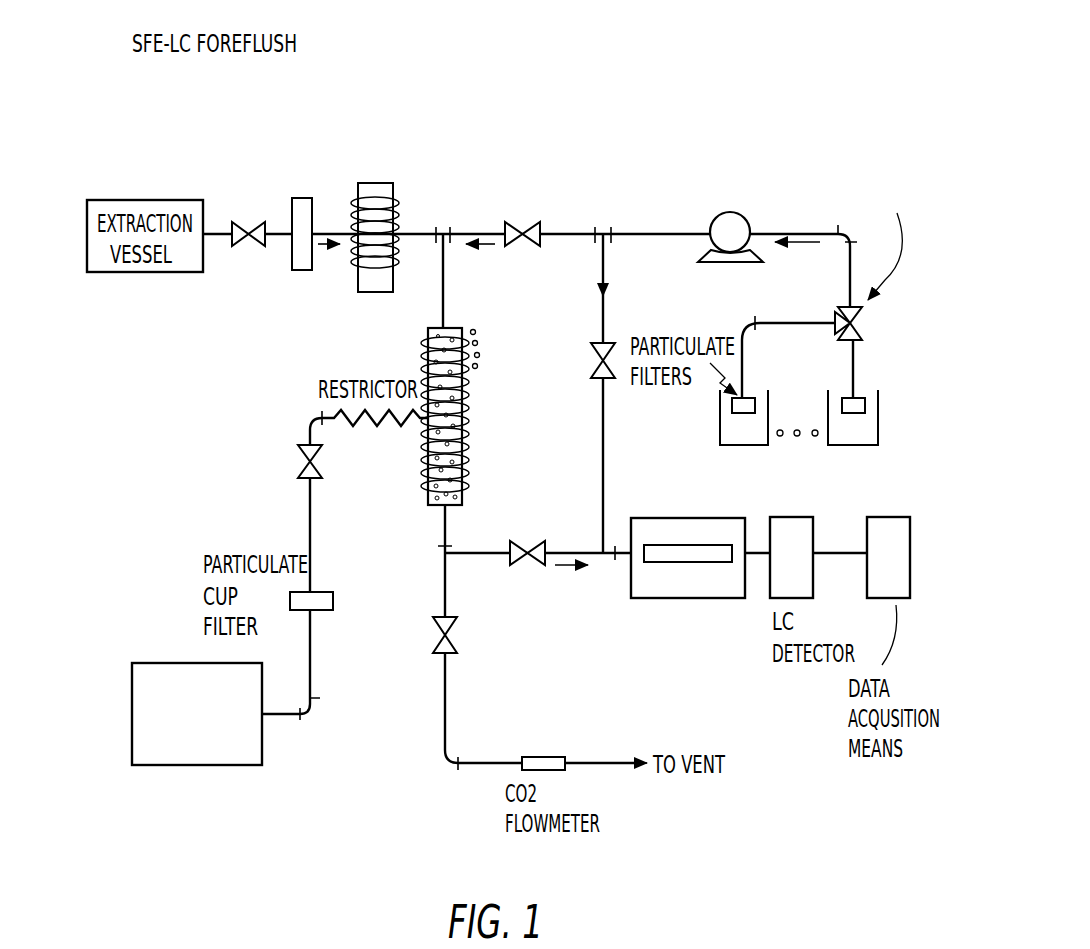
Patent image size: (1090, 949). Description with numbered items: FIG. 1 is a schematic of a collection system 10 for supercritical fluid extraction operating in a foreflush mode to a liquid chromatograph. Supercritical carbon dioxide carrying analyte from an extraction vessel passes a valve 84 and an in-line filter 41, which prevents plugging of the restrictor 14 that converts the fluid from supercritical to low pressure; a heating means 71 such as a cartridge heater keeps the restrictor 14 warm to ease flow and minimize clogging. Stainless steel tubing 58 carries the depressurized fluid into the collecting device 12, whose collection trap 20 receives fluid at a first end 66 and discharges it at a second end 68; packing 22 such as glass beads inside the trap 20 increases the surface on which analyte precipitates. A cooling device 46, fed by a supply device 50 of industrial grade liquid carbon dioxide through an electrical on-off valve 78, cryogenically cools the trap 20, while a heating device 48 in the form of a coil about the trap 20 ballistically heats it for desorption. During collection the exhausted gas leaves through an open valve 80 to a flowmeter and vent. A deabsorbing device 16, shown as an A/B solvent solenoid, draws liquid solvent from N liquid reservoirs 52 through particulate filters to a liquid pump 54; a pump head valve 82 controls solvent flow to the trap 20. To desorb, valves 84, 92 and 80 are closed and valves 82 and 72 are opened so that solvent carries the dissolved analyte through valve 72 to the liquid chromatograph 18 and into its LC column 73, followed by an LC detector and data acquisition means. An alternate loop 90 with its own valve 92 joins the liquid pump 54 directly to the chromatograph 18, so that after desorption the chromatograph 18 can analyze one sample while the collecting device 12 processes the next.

The collection system 10 is at (381, 804).
The collecting device 12 is at (418, 452).
The restrictor 14 is at (404, 196).
The deabsorbing device 16 is at (888, 145).
The chromatograph 18 is at (686, 517).
The collection trap 20 is at (458, 511).
The packing 22 is at (433, 487).
The in-line filter 41 is at (302, 198).
The cooling device 46 is at (283, 742).
The heating device 48 is at (487, 345).
The liquid supply device 50 is at (138, 658).
The liquid reservoirs 52 is at (882, 450).
The liquid pump 54 is at (732, 208).
The tubing 58 is at (475, 228).
The first end of collection trap 66 is at (437, 328).
The second end of collection trap 68 is at (438, 509).
The heating means 71 is at (358, 262).
The valve 72 is at (535, 571).
The LC column 73 is at (708, 540).
The on-off valve 78 is at (304, 440).
The valve 80 is at (463, 634).
The valve 82 is at (535, 258).
The valve 84 is at (247, 260).
The alternate loop 90 is at (608, 290).
The valve 92 is at (612, 388).